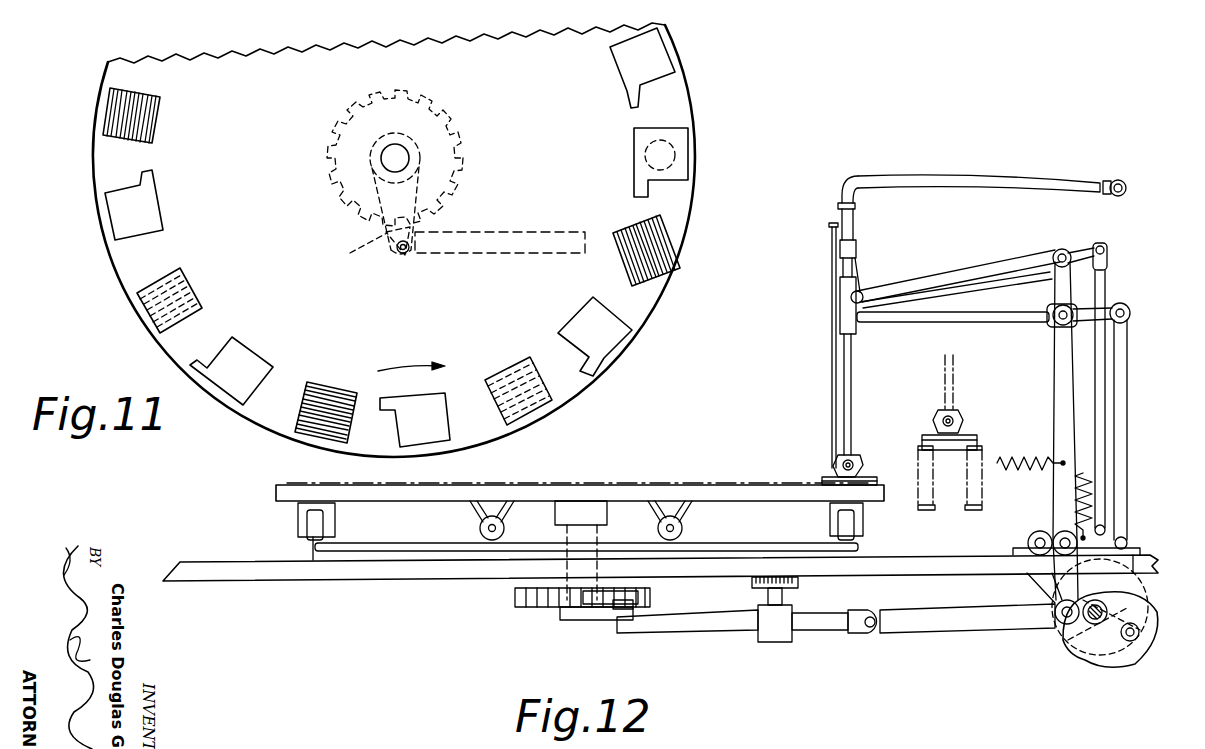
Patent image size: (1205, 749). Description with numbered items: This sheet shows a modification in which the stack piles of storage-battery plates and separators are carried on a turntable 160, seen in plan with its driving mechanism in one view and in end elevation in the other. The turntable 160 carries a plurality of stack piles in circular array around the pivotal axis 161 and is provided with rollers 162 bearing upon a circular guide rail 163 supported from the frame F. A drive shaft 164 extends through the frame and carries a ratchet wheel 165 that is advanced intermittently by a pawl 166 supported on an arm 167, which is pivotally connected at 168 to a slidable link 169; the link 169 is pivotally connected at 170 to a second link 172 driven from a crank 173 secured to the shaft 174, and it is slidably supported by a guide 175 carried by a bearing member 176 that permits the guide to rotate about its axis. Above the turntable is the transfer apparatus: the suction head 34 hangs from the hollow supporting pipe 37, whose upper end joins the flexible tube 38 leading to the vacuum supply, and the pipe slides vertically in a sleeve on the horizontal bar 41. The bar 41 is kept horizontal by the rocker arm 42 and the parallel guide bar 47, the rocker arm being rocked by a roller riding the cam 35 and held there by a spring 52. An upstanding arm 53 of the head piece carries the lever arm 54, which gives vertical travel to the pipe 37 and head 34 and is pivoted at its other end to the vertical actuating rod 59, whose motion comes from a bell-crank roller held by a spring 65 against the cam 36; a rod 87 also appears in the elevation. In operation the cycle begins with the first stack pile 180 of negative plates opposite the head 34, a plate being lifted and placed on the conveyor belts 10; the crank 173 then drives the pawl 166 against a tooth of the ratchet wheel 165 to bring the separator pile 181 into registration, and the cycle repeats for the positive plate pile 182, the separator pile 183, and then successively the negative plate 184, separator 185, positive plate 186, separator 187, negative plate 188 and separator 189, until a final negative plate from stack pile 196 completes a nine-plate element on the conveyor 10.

In FIG. 12, the conveyor belts 10 is at (923, 448).
In FIG. 11, the suction head 34 is at (645, 148).
In FIG. 12, the suction head 34 is at (862, 470).
In FIG. 12, the cam 35 is at (1093, 664).
In FIG. 12, the cam 36 is at (1077, 662).
In FIG. 12, the hollow supporting pipe 37 is at (852, 392).
In FIG. 12, the flexible tube 38 is at (952, 183).
In FIG. 12, the horizontal bar 41 is at (953, 332).
In FIG. 12, the vertical actuating rocker arm 42 is at (1058, 380).
In FIG. 12, the parallel guide bar 47 is at (1127, 395).
In FIG. 12, the spring 52 is at (1020, 473).
In FIG. 12, the upstanding arm 53 is at (1051, 273).
In FIG. 12, the lever arm 54 is at (943, 277).
In FIG. 12, the vertical actuating rod 59 is at (1103, 352).
In FIG. 12, the spring 65 is at (1095, 488).
In FIG. 12, the rod 87 is at (832, 363).
In FIG. 12, the frame F is at (943, 570).
In FIG. 11, the turntable 160 is at (697, 208).
In FIG. 12, the turntable 160 is at (727, 485).
In FIG. 11, the pivotal axis 161 is at (398, 158).
In FIG. 12, the rollers 162 is at (307, 540).
In FIG. 12, the circular guide rail 163 is at (333, 547).
In FIG. 12, the drive shaft 164 is at (592, 532).
In FIG. 11, the ratchet wheel 165 is at (450, 172).
In FIG. 12, the ratchet wheel 165 is at (518, 607).
In FIG. 11, the pawl 166 is at (388, 235).
In FIG. 12, the pawl 166 is at (608, 598).
In FIG. 11, the arm 167 is at (420, 198).
In FIG. 12, the arm 167 is at (560, 617).
In FIG. 11, the pivot 168 is at (399, 258).
In FIG. 12, the pivot 168 is at (623, 610).
In FIG. 11, the slidable link 169 is at (513, 255).
In FIG. 12, the slidable link 169 is at (693, 630).
In FIG. 12, the pivot 170 is at (870, 620).
In FIG. 12, the second link 172 is at (942, 637).
In FIG. 12, the crank 173 is at (1138, 573).
In FIG. 12, the shaft 174 is at (1060, 637).
In FIG. 12, the guide 175 is at (772, 642).
In FIG. 12, the bearing member 176 is at (750, 587).
In FIG. 11, the first stack pile 180 is at (687, 170).
In FIG. 12, the first stack pile 180 is at (823, 478).
In FIG. 11, the stack pile of separators 181 is at (662, 268).
In FIG. 11, the stack pile of positive plates 182 is at (608, 345).
In FIG. 11, the stack pile of separators 183 is at (520, 420).
In FIG. 11, the negative plate 184 is at (437, 440).
In FIG. 11, the separator 185 is at (312, 430).
In FIG. 11, the positive plate 186 is at (232, 392).
In FIG. 11, the separator 187 is at (146, 296).
In FIG. 11, the negative plate 188 is at (113, 208).
In FIG. 11, the separator 189 is at (110, 114).
In FIG. 11, the stack pile 196 is at (658, 50).